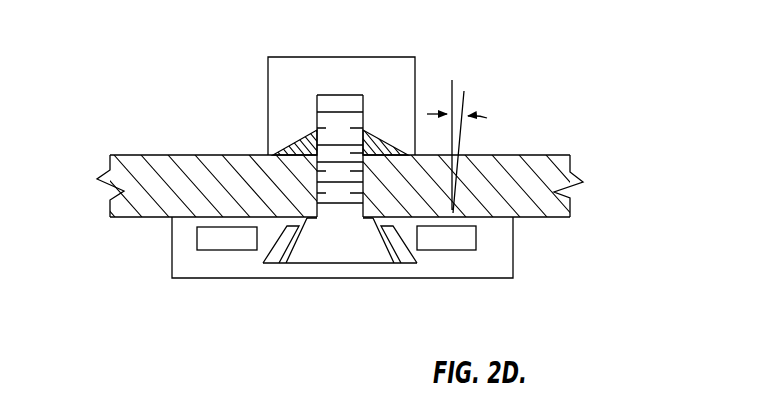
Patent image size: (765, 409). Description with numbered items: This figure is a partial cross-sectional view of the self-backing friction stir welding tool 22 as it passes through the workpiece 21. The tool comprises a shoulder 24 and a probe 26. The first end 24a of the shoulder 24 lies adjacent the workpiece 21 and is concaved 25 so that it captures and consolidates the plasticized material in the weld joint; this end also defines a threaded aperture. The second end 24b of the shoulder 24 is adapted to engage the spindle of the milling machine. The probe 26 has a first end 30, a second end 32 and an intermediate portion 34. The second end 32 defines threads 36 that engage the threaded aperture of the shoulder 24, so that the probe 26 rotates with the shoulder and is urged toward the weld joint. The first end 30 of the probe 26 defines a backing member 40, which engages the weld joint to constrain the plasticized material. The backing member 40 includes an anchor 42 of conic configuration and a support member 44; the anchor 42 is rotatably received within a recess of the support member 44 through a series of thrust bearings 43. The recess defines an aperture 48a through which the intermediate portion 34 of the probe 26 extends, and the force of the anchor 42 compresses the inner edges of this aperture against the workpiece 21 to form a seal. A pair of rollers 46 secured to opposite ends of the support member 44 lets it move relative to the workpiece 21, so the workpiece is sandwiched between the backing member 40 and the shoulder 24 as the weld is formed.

The workpiece 21 is at (528, 173).
The self-backing friction stir welding tool 22 is at (505, 122).
The shoulder 24 is at (293, 75).
The first end of the shoulder 24a is at (297, 156).
The second end of the shoulder 24b is at (322, 57).
The concaved first end 25 is at (378, 148).
The probe 26 is at (348, 137).
The first end of the probe 30 is at (380, 255).
The second end of the probe 32 is at (343, 97).
The intermediate portion of the probe 34 is at (328, 186).
The threads 36 is at (327, 128).
The backing member 40 is at (332, 253).
The anchor 42 is at (347, 243).
The thrust bearings 43 is at (393, 233).
The support member 44 is at (485, 265).
The rollers 46 is at (235, 243).
The aperture 48a is at (310, 218).